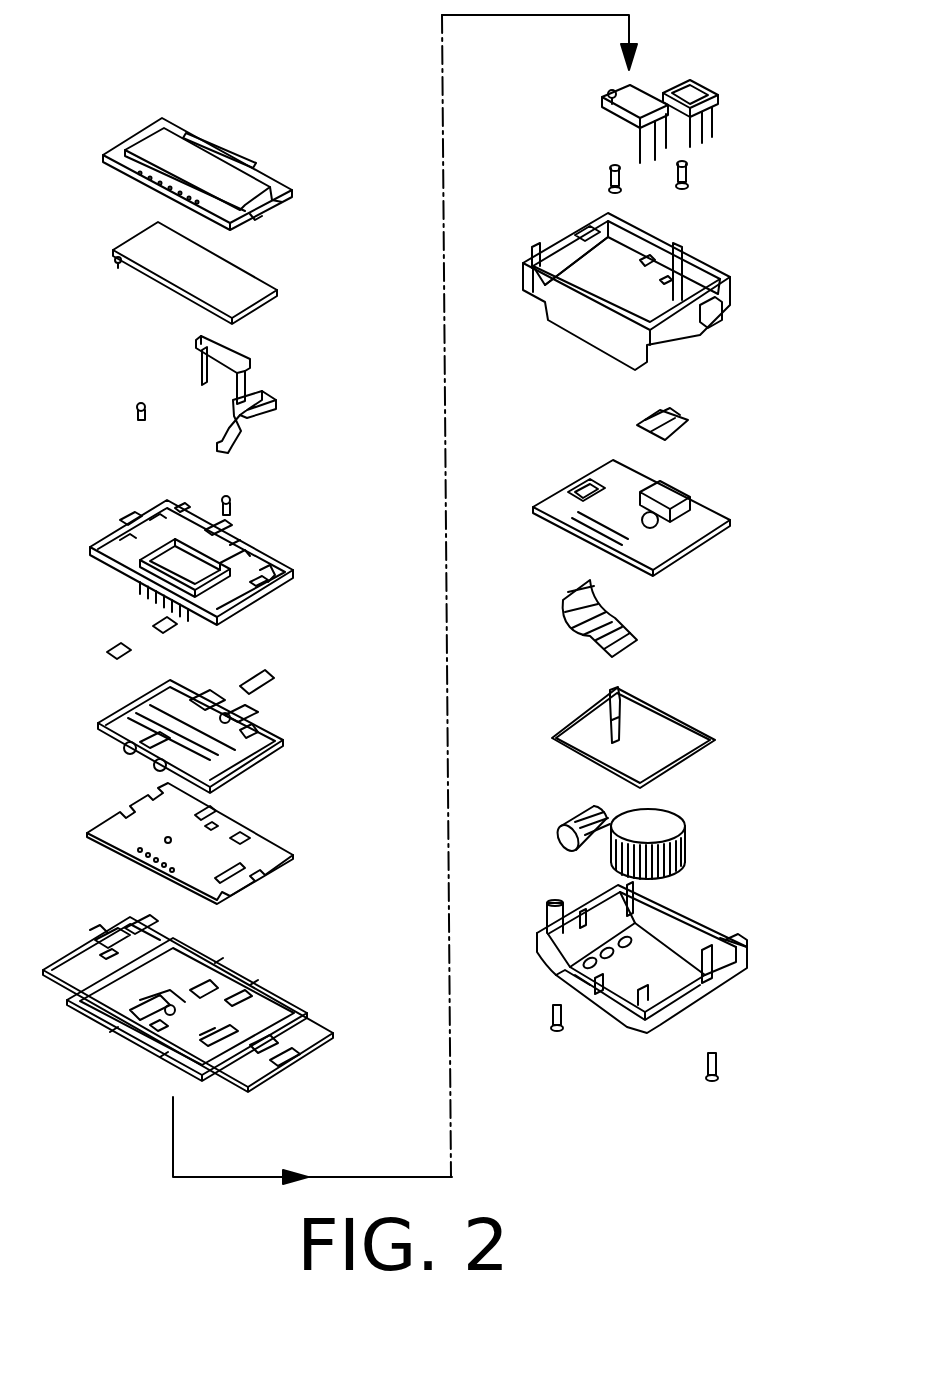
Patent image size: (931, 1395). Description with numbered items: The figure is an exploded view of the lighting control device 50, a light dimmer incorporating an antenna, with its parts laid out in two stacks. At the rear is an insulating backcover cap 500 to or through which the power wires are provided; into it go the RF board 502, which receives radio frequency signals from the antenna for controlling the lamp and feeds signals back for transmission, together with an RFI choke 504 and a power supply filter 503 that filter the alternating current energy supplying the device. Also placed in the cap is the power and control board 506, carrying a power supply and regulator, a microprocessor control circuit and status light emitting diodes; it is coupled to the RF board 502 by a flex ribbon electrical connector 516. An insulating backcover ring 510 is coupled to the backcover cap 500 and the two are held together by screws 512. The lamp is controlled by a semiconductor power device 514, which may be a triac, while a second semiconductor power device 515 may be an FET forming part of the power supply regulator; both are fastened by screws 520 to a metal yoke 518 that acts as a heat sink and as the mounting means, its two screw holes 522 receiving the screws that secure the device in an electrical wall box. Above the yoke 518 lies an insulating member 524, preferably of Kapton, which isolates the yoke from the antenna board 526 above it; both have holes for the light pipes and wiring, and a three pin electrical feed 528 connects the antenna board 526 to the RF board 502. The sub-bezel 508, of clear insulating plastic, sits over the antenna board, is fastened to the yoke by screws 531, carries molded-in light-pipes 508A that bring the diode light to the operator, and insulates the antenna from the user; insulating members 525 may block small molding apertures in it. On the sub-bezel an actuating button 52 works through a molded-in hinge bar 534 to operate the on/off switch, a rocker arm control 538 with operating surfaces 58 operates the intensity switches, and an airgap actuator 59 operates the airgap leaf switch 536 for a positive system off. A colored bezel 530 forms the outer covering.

The lighting control device 50 is at (246, 72).
The bezel 530 is at (262, 172).
The actuating button 52 is at (260, 280).
The rocker arm control 538 is at (196, 365).
The operating surfaces 58 is at (232, 365).
The airgap actuator 59 is at (270, 405).
The screws 531 is at (136, 405).
The sub-bezel 508 is at (104, 566).
The light-pipes 508A is at (152, 590).
The hinge bar 534 is at (215, 556).
The insulating members 525 is at (113, 647).
The antenna board 526 is at (255, 732).
The insulating member 524 is at (262, 846).
The yoke 518 is at (236, 975).
The screw holes 522 is at (294, 1054).
The semiconductor power device 514 is at (612, 121).
The semiconductor power device 515 is at (715, 108).
The screws 520 is at (609, 172).
The backcover ring 510 is at (692, 263).
The airgap leaf switch 536 is at (685, 410).
The power and control board 506 is at (712, 516).
The flex ribbon electrical connector 516 is at (620, 626).
The three pin electrical feed 528 is at (610, 700).
The RF board 502 is at (660, 723).
The power supply filter 503 is at (567, 832).
The RFI choke 504 is at (655, 816).
The backcover cap 500 is at (675, 957).
The screws 512 is at (553, 1028).